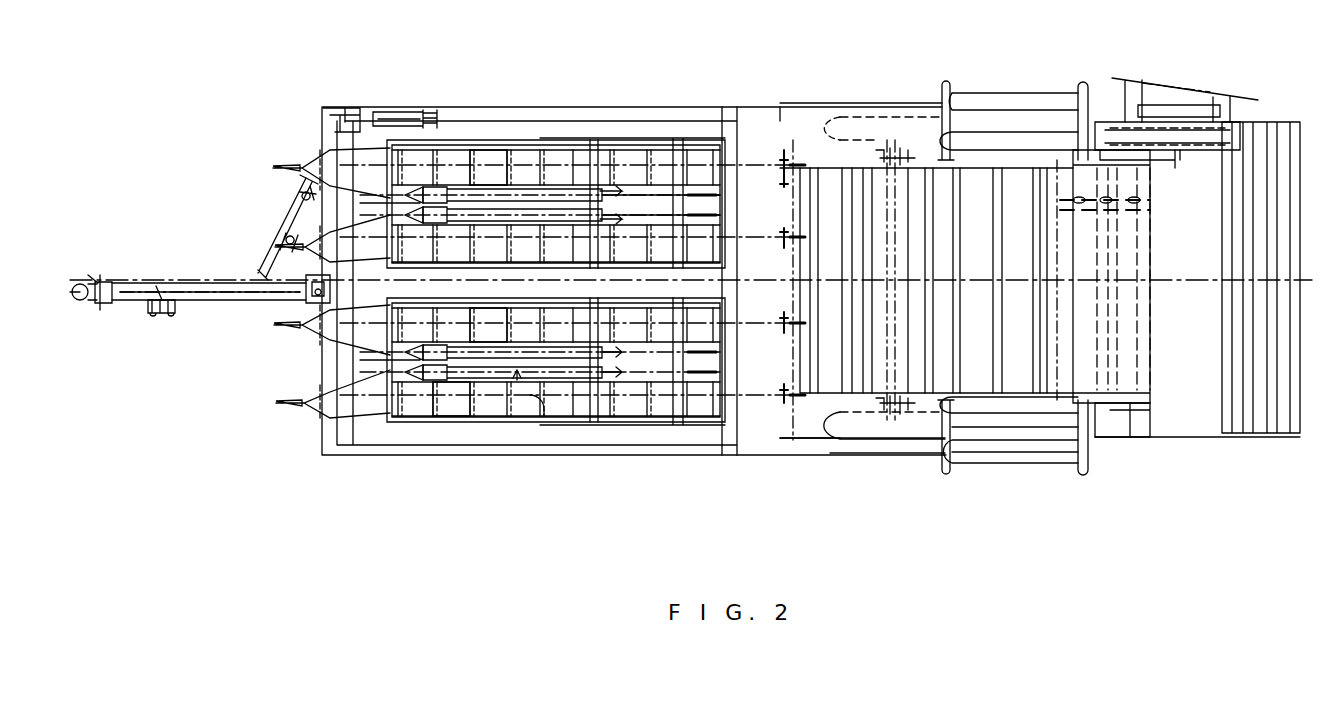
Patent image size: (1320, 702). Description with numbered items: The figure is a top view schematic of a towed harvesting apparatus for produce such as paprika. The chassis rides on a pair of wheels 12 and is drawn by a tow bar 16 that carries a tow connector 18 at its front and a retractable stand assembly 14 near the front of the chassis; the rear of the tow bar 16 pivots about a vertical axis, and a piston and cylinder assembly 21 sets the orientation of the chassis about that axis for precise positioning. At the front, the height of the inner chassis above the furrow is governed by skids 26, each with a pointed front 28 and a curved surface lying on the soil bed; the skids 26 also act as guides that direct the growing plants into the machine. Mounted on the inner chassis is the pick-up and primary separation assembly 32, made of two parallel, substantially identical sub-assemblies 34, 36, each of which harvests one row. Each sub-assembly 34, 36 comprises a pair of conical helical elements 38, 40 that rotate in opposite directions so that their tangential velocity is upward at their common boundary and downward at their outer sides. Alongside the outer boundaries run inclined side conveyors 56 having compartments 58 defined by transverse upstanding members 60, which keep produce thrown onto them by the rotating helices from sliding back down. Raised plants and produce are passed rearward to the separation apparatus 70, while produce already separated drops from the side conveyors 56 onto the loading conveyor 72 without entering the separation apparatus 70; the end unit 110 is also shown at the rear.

The wheels 12 is at (850, 128).
The retractable stand assembly 14 is at (158, 316).
The tow bar 16 is at (203, 283).
The tow connector 18 is at (100, 282).
The piston and cylinder assembly 21 is at (290, 231).
The skids 26 is at (316, 352).
The pointed front 28 is at (285, 170).
The pick-up and primary separation assembly 32 is at (501, 91).
The pick-up and primary separation sub-assembly 34 is at (528, 162).
The pick-up and primary separation sub-assembly 36 is at (517, 380).
The helical element 38 is at (433, 213).
The helical element 40 is at (447, 192).
The inclined side conveyor 56 is at (639, 152).
The compartments 58 is at (487, 162).
The transverse upstanding members 60 is at (532, 396).
The separation apparatus 70 is at (863, 151).
The loading conveyor 72 is at (1015, 170).
The end unit 110 is at (1110, 172).